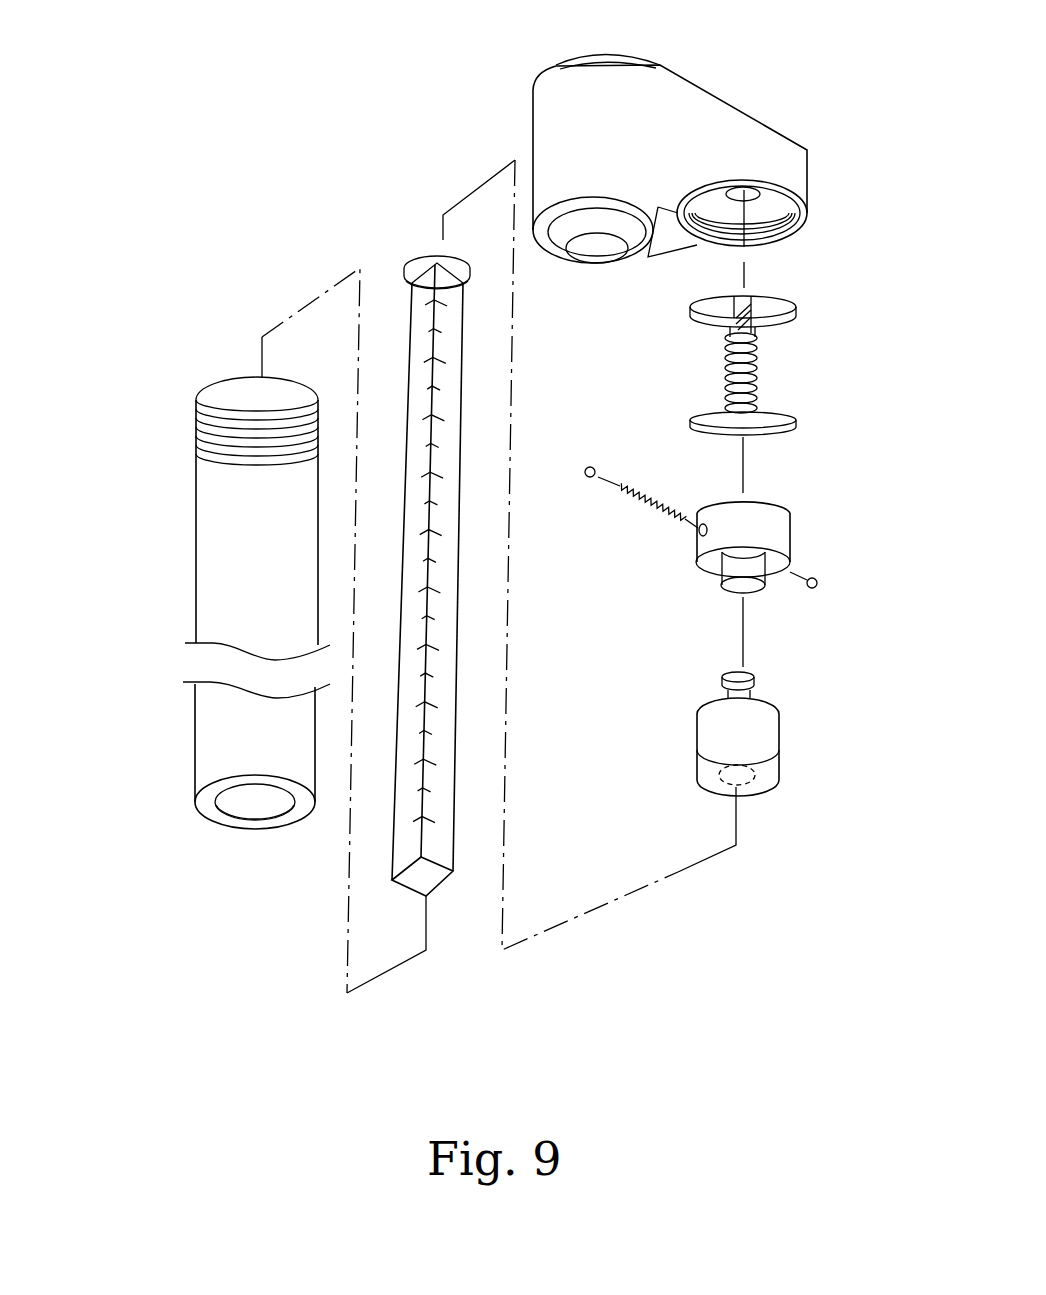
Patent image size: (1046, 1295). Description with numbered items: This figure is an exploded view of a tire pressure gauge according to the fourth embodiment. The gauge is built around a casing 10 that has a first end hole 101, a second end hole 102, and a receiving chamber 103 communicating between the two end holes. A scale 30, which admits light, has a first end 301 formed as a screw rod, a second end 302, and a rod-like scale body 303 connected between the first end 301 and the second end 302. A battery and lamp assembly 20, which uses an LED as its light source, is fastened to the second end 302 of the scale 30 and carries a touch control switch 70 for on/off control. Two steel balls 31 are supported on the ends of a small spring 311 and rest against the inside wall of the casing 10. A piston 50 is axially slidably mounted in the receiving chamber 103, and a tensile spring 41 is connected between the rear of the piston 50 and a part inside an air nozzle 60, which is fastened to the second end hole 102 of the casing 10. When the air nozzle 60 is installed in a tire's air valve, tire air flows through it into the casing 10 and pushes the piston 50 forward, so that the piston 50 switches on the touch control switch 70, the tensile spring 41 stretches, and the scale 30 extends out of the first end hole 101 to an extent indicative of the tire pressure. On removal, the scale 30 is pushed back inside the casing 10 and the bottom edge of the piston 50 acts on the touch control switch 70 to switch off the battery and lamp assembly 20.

The casing 10 is at (147, 557).
The first end hole 101 is at (237, 797).
The second end hole 102 is at (238, 377).
The receiving chamber 103 is at (255, 783).
The battery and lamp assembly 20 is at (782, 787).
The scale 30 is at (459, 453).
The first end 301 is at (433, 874).
The second end 302 is at (417, 258).
The rod-like scale body 303 is at (459, 553).
The steel balls 31 is at (587, 467).
The small spring 311 is at (648, 507).
The tensile spring 41 is at (757, 357).
The piston 50 is at (767, 422).
The air nozzle 60 is at (598, 24).
The touch control switch 70 is at (753, 729).